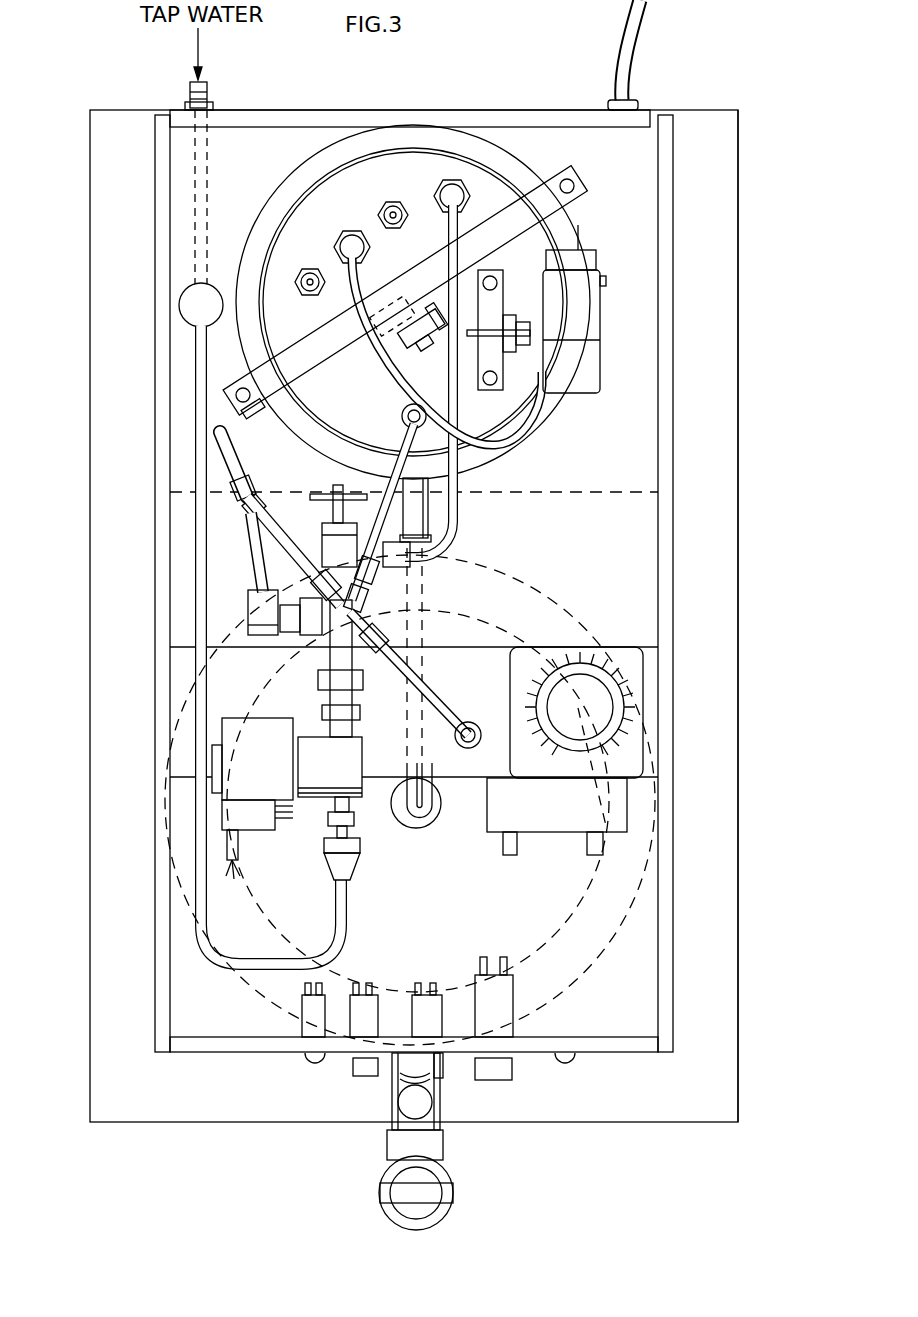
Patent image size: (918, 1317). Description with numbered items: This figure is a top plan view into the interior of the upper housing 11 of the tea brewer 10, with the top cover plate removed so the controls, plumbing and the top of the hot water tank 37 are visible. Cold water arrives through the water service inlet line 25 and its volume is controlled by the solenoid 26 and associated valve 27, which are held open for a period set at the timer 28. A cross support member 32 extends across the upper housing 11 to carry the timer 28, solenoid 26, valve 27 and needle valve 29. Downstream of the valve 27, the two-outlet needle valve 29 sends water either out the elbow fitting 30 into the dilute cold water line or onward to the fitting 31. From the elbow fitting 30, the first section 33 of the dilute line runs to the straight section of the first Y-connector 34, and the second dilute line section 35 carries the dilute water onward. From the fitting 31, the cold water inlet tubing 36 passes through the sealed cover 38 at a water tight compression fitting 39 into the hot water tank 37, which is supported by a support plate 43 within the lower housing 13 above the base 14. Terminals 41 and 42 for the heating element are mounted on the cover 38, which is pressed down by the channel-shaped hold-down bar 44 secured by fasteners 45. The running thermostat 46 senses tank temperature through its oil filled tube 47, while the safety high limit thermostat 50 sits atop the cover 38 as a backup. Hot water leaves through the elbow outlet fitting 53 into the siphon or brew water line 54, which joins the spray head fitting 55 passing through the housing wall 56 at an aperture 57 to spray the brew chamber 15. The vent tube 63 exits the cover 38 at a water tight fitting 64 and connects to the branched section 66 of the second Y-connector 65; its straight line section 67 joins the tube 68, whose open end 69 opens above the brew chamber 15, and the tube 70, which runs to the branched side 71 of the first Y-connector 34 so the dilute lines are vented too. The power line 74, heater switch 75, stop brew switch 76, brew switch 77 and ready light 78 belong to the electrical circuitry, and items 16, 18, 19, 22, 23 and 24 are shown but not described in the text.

The tea brewer 10 is at (523, 95).
The upper housing 11 is at (680, 712).
The lower housing 13 is at (580, 503).
The base 14 is at (739, 428).
The brew chamber 15 is at (600, 866).
The outlet pipe 16 is at (400, 1090).
The bolt 18 is at (568, 1058).
The cover outline 19 is at (632, 930).
The coupling ring 22 is at (370, 1213).
The ball 23 is at (430, 1105).
The tap water inlet fitting 24 is at (207, 90).
The water service inlet line 25 is at (195, 536).
The solenoid 26 is at (270, 767).
The valve 27 is at (338, 778).
The timer 28 is at (576, 700).
The needle valve 29 is at (330, 540).
The elbow fitting 30 is at (263, 636).
The fitting 31 is at (440, 555).
The cross support member 32 is at (468, 770).
The first section of dilute line 33 is at (255, 572).
The first Y-connector 34 is at (234, 506).
The second dilute line section 35 is at (234, 452).
The cold water inlet tubing 36 is at (459, 474).
The hot water tank 37 is at (280, 183).
The cover 38 is at (487, 182).
The compression fitting 39 is at (446, 193).
The terminal 41 is at (313, 268).
The terminal 42 is at (392, 203).
The support plate 43 is at (215, 220).
The hold-down bar 44 is at (550, 205).
The fasteners 45 is at (574, 184).
The running thermostat 46 is at (596, 313).
The oil filled tube 47 is at (535, 412).
The safety high limit thermostat 50 is at (432, 340).
The elbow outlet fitting 53 is at (428, 512).
The siphon or brew water line 54 is at (457, 632).
The spray head fitting 55 is at (410, 812).
The housing wall 56 is at (531, 908).
The aperture 57 is at (432, 822).
The vent tube 63 is at (400, 427).
The water tight fitting 64 is at (406, 405).
The second Y-connector 65 is at (384, 632).
The branched section 66 is at (372, 585).
The straight line section 67 is at (334, 614).
The tube 68 is at (426, 692).
The open end 69 is at (472, 721).
The tube 70 is at (291, 552).
The branched side 71 is at (260, 494).
The power line 74 is at (628, 48).
The heater switch 75 is at (505, 1075).
The stop brew switch 76 is at (438, 1072).
The brew switch 77 is at (365, 1074).
The ready light 78 is at (316, 1063).